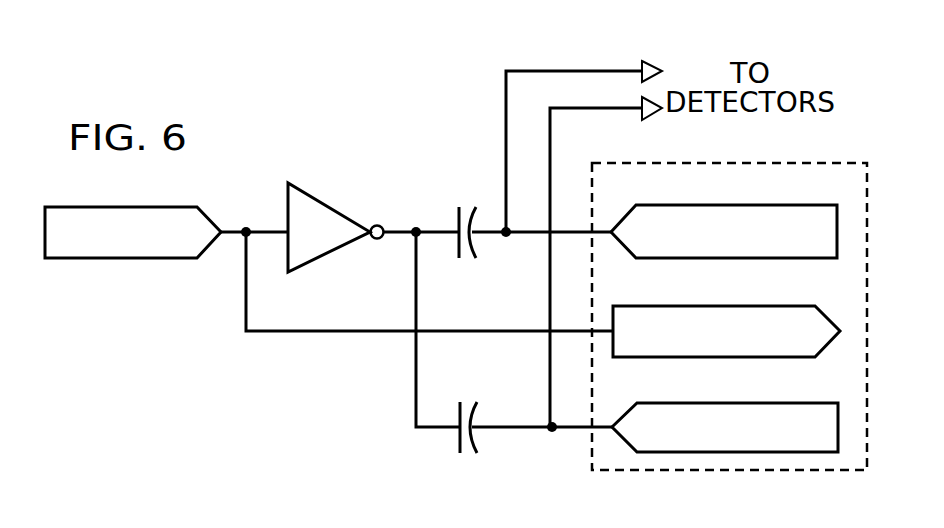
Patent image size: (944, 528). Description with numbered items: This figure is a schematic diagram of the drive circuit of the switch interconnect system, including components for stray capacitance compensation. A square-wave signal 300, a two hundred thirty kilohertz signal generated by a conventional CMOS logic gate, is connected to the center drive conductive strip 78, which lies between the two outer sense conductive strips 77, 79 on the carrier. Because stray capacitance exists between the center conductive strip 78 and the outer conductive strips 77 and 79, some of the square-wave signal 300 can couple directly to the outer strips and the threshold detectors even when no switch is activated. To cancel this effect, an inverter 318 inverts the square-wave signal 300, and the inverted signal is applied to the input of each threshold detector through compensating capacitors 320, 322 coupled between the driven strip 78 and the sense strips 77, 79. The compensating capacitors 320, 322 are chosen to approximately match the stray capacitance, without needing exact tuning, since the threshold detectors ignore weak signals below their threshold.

The square-wave signal 300 is at (115, 260).
The inverter 318 is at (317, 195).
The compensating capacitor 320 is at (450, 227).
The compensating capacitor 322 is at (453, 438).
The outer conductive strip 77 is at (743, 205).
The center conductive strip 78 is at (740, 306).
The outer conductive strip 79 is at (735, 403).